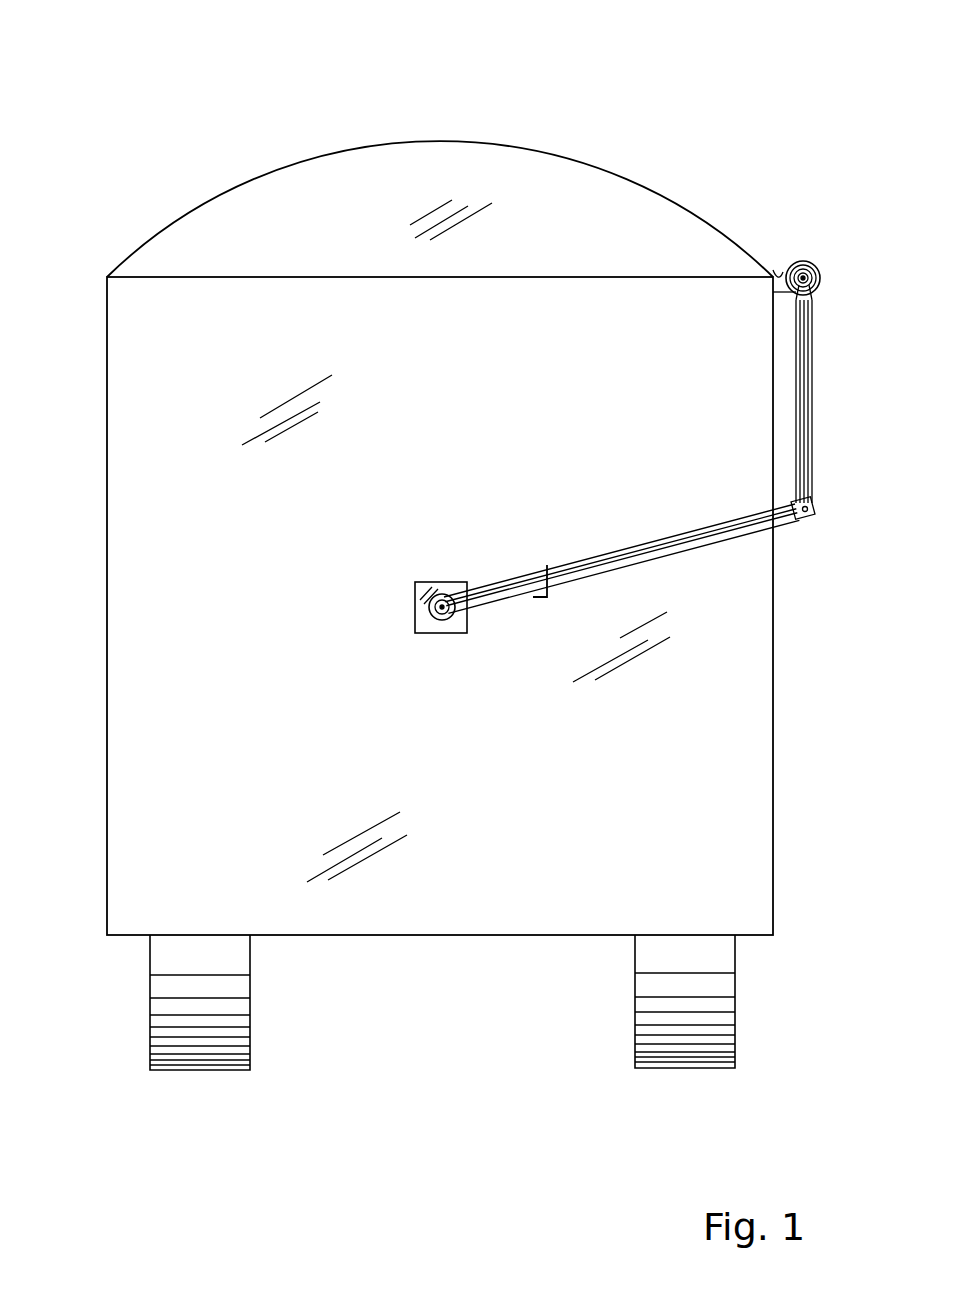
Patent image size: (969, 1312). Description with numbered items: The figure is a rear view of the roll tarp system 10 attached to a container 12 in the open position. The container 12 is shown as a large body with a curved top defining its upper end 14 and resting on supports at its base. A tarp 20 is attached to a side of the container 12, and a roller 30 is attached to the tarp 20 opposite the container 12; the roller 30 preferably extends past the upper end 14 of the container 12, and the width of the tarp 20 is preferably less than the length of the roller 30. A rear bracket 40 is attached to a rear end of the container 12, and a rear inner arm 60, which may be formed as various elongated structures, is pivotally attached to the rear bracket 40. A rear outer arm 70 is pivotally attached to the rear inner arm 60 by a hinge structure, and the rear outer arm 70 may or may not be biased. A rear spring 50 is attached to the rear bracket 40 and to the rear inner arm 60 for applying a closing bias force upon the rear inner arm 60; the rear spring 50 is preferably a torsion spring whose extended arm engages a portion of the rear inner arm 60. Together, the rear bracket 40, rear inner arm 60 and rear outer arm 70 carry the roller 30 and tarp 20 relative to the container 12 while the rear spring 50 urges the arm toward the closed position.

The roll tarp system 10 is at (173, 137).
The container 12 is at (399, 960).
The upper end 14 is at (577, 170).
The tarp 20 is at (779, 272).
The roller 30 is at (810, 258).
The rear bracket 40 is at (420, 612).
The rear spring 50 is at (445, 618).
The rear inner arm 60 is at (690, 533).
The rear outer arm 70 is at (806, 402).